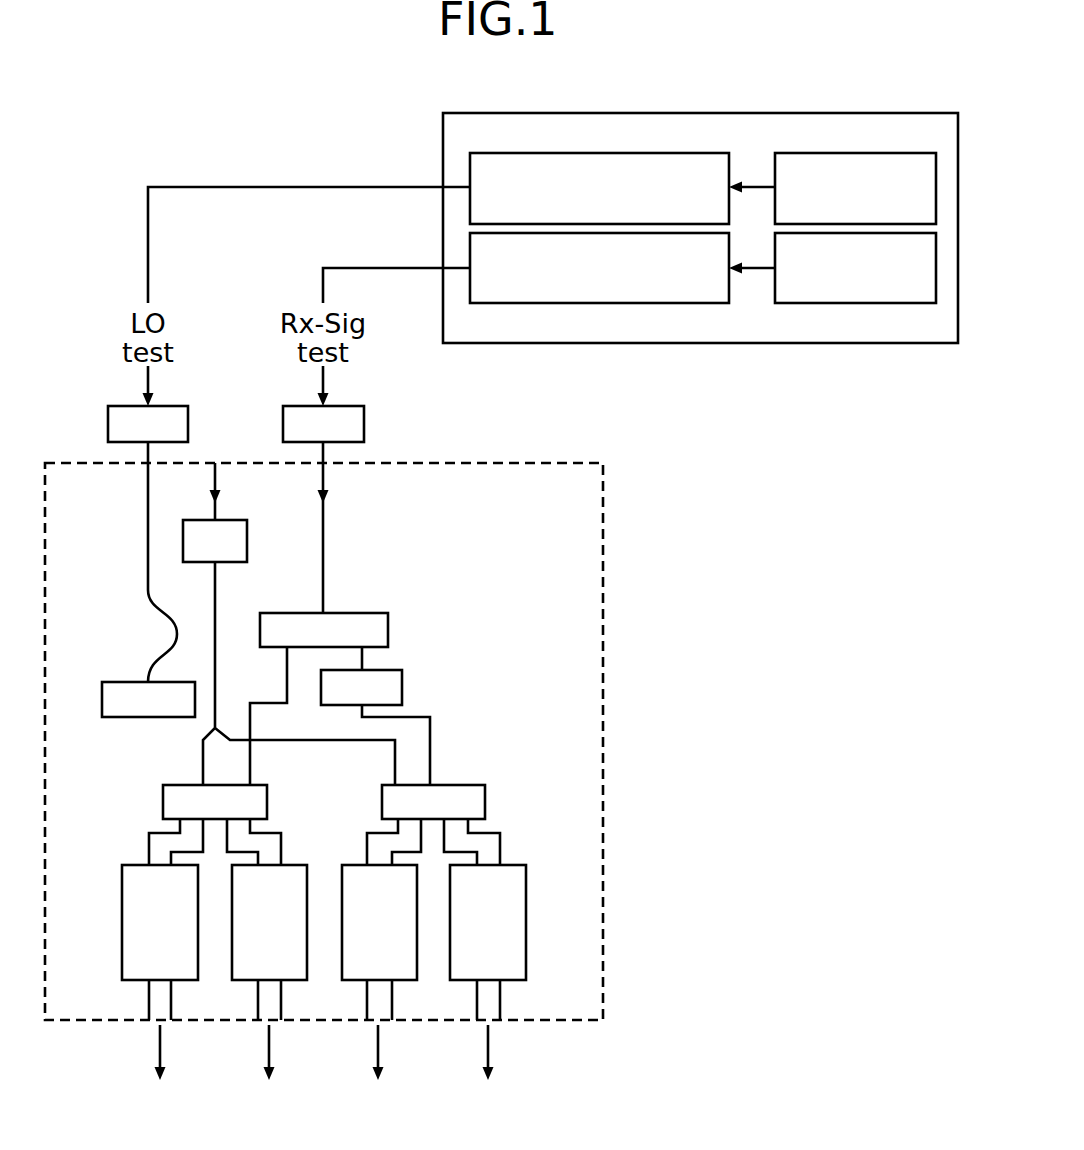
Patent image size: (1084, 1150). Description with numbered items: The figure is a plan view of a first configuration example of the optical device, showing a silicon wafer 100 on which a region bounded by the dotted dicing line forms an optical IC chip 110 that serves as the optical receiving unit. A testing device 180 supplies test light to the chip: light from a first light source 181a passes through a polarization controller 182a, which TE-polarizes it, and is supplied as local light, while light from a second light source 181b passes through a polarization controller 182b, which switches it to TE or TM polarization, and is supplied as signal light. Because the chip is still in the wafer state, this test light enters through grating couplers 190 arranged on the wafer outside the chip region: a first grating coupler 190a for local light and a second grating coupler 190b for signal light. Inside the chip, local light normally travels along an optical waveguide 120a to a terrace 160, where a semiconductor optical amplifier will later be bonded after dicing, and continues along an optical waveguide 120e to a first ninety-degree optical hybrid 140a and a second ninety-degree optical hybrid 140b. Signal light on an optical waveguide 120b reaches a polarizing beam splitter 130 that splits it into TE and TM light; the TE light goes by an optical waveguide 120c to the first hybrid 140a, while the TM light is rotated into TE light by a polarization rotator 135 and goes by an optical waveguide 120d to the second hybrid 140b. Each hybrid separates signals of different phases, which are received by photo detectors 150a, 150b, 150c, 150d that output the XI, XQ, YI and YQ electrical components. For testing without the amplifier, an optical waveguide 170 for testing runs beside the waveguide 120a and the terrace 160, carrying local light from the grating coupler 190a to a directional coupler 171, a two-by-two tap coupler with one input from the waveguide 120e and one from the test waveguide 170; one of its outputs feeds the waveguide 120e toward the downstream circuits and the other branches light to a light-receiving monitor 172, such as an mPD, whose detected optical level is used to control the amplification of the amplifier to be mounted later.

The wafer 100 is at (645, 826).
The optical IC chip 110 is at (572, 553).
The optical waveguide 120a is at (217, 508).
The optical waveguide 120b is at (325, 540).
The optical waveguide 120c is at (251, 718).
The optical waveguide 120d is at (432, 733).
The optical waveguide 120e is at (216, 590).
The polarizing beam splitter 130 is at (389, 625).
The polarization rotator 135 is at (403, 688).
The first 90° optical hybrid 140a is at (268, 800).
The second 90° optical hybrid 140b is at (486, 800).
The photo detector 150a is at (126, 981).
The photo detector 150b is at (236, 981).
The photo detector 150c is at (346, 981).
The photo detector 150d is at (454, 981).
The terrace 160 is at (193, 520).
The optical waveguide for testing 170 is at (148, 514).
The directional coupler 171 is at (177, 630).
The light-receiving monitor 172 is at (128, 718).
The testing device 180 is at (787, 113).
The light source 1 181a is at (868, 153).
The light source 2 181b is at (868, 303).
The polarization controller 182a is at (628, 153).
The polarization controller 182b is at (628, 303).
The grating couplers 190 is at (265, 392).
The GC 1 190a is at (122, 406).
The GC 2 190b is at (360, 406).